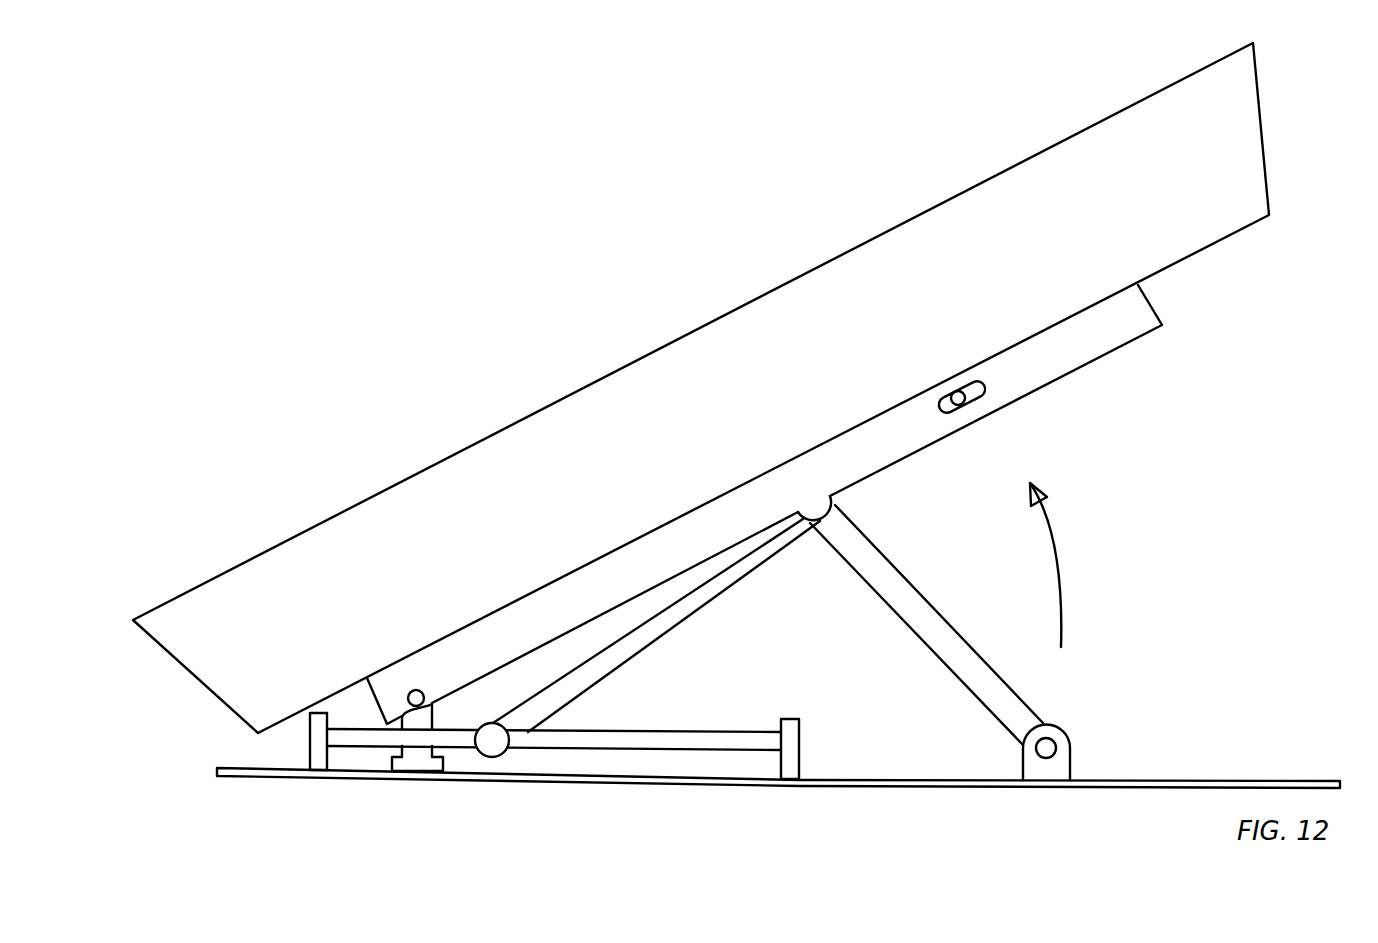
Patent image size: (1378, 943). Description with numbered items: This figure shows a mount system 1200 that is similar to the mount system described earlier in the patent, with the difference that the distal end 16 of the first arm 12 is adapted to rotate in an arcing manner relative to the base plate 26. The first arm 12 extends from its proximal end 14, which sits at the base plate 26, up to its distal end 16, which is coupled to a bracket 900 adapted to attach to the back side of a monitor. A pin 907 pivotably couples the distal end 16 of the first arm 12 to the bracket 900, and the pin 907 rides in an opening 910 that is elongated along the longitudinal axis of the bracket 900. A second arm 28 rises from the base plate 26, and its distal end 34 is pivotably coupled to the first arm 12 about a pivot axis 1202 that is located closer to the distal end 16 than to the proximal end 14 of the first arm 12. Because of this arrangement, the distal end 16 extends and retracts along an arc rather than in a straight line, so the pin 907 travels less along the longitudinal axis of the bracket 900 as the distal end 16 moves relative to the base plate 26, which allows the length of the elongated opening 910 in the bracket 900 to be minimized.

The bracket 900 is at (587, 585).
The pivot axis 1202 is at (810, 508).
The pin 907 is at (960, 394).
The opening 910 is at (977, 383).
The distal end 16 is at (978, 422).
The distal end 34 is at (833, 502).
The mount system 1200 is at (1138, 542).
The second arm 28 is at (912, 602).
The first arm 12 is at (697, 597).
The proximal end 14 is at (493, 742).
The base plate 26 is at (1168, 780).